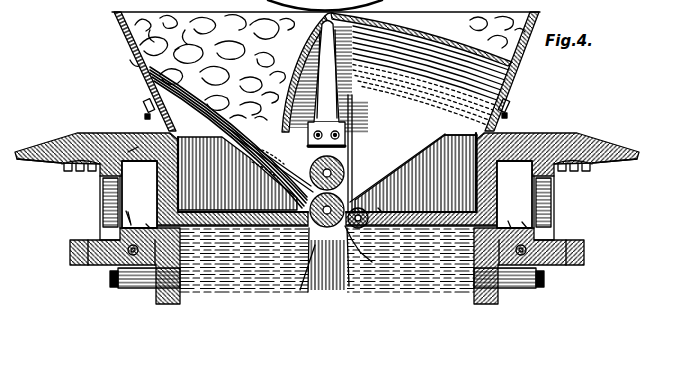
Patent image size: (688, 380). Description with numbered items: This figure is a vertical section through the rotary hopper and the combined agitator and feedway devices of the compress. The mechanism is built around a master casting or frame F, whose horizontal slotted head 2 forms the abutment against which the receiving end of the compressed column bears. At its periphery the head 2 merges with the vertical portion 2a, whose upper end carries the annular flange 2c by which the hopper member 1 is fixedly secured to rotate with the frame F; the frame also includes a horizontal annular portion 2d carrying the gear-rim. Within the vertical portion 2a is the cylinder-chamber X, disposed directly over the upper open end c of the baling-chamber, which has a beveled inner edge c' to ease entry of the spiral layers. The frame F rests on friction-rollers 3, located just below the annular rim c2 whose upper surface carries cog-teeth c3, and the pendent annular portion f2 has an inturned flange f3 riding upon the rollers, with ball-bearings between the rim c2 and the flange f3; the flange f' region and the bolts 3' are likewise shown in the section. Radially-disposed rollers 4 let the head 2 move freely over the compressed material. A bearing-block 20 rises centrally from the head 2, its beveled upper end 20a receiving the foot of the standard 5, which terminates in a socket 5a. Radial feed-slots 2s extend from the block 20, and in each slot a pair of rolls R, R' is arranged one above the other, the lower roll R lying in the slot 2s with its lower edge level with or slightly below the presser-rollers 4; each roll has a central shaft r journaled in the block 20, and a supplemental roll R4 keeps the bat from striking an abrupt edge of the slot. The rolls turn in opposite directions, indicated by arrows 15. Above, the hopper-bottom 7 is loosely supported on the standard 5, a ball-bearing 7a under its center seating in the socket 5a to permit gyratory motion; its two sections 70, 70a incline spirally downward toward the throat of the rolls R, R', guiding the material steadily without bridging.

The hopper member 1 is at (127, 47).
The slotted head 2 is at (327, 206).
The vertical portion 2a is at (327, 194).
The annular flange 2c is at (147, 107).
The horizontal annular portion 2d is at (134, 147).
The feed-slot 2s is at (352, 243).
The friction-roller 3 is at (327, 270).
The bed bolt 3' is at (327, 289).
The presser-roller 4 is at (327, 172).
The standard 5 is at (331, 101).
The socket 5a is at (431, 75).
The hopper-bottom 7 is at (338, 23).
The ball-bearing 7a is at (356, 13).
The arrows 15 is at (231, 137).
The bearing-block 20 is at (343, 183).
The beveled upper end 20a is at (358, 138).
The hopper-bottom section 70 is at (212, 67).
The hopper-bottom section 70a is at (491, 32).
The master casting or frame F is at (327, 170).
The cylinder-chamber X is at (446, 161).
The lower roll R is at (324, 246).
The upper roll R' is at (345, 167).
The supplemental roll R4 is at (373, 202).
The central shaft r is at (336, 202).
The flange f' is at (327, 177).
The annular portion f2 is at (102, 190).
The inturned flange f3 is at (105, 267).
The upper open end c is at (139, 219).
The beveled inner edge c' is at (507, 216).
The annular rim c2 is at (103, 226).
The cog-teeth c3 is at (327, 211).